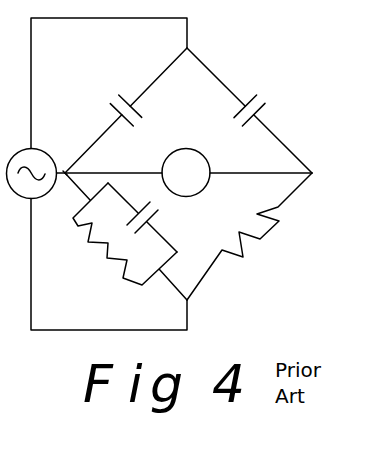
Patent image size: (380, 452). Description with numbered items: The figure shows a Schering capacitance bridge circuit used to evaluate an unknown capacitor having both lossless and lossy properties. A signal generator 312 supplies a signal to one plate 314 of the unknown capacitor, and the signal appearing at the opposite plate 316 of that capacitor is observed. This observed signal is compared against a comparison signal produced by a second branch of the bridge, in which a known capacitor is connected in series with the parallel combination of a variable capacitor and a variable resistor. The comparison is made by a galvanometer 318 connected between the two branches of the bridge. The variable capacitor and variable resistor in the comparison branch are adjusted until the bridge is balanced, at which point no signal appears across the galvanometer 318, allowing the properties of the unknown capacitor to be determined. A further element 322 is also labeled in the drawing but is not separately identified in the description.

The AC voltage source 312 is at (37, 148).
The first electrode of capacitor C2 314 is at (247, 99).
The second electrode of capacitor C2 316 is at (261, 109).
The null detector (galvanometer) 318 is at (180, 148).
The bridge node 322 is at (64, 165).